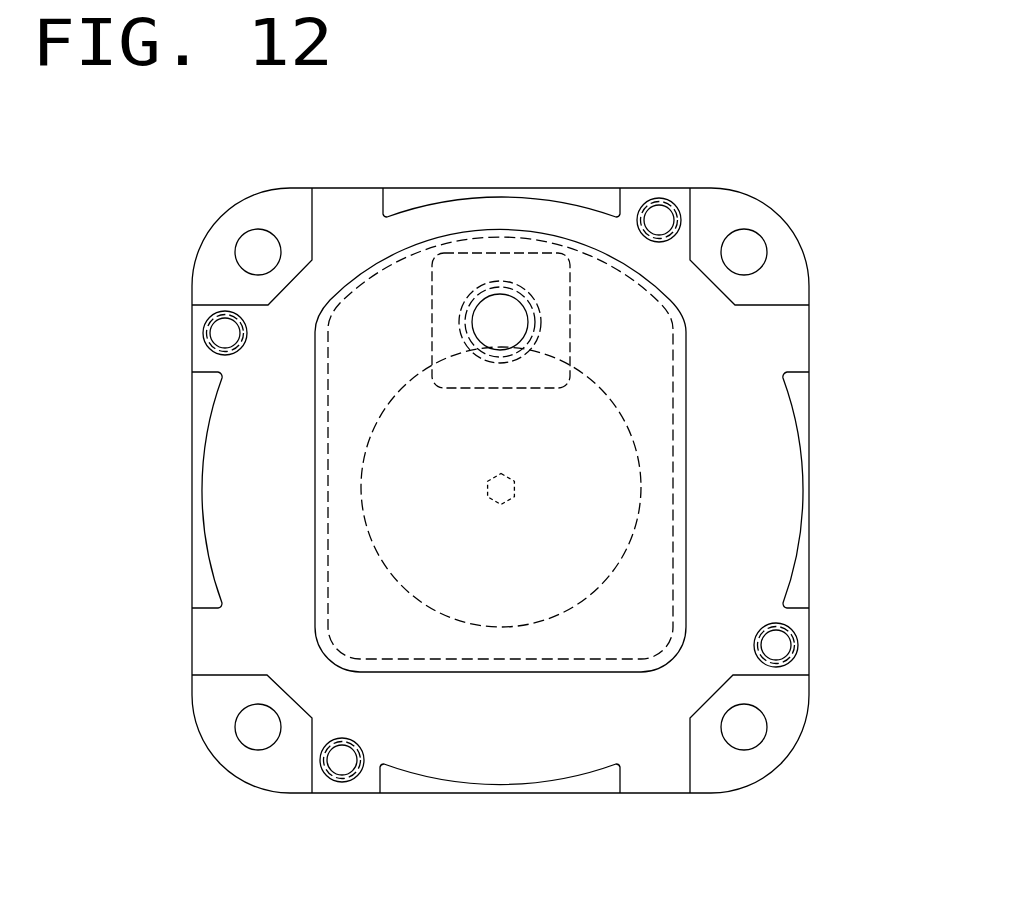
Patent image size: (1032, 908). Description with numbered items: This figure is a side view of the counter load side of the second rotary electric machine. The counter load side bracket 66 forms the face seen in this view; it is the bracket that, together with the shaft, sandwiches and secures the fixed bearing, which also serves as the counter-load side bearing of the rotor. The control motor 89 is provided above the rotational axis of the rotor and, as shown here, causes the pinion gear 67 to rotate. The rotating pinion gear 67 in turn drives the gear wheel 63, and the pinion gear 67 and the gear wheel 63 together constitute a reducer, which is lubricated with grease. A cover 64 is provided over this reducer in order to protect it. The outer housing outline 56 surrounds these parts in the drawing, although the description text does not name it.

The housing 56 is at (698, 220).
The gear wheel 63 is at (422, 408).
The cover 64 is at (675, 297).
The counter load side bracket 66 is at (720, 410).
The pinion gear 67 is at (490, 283).
The control motor 89 is at (537, 267).